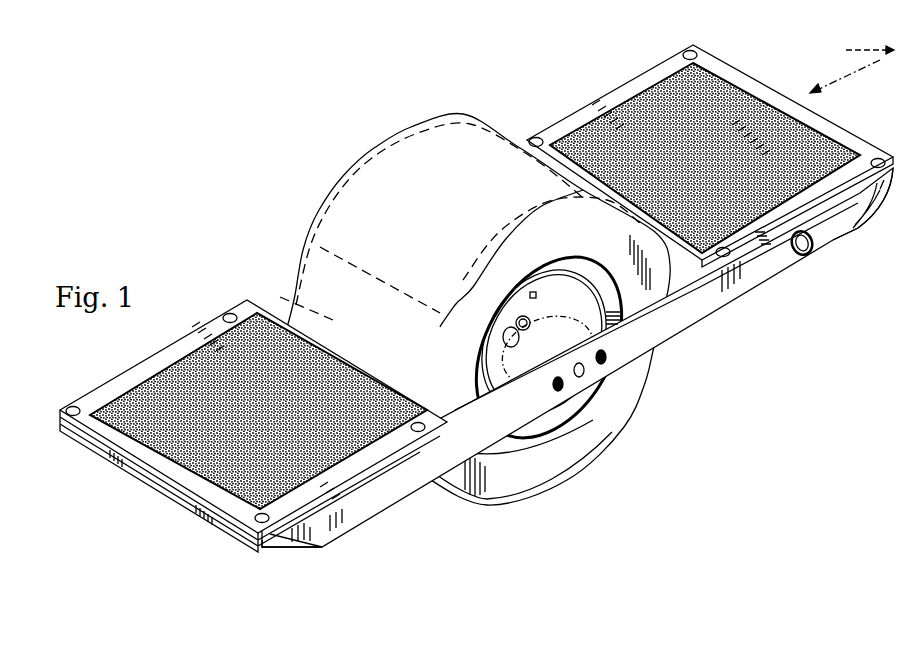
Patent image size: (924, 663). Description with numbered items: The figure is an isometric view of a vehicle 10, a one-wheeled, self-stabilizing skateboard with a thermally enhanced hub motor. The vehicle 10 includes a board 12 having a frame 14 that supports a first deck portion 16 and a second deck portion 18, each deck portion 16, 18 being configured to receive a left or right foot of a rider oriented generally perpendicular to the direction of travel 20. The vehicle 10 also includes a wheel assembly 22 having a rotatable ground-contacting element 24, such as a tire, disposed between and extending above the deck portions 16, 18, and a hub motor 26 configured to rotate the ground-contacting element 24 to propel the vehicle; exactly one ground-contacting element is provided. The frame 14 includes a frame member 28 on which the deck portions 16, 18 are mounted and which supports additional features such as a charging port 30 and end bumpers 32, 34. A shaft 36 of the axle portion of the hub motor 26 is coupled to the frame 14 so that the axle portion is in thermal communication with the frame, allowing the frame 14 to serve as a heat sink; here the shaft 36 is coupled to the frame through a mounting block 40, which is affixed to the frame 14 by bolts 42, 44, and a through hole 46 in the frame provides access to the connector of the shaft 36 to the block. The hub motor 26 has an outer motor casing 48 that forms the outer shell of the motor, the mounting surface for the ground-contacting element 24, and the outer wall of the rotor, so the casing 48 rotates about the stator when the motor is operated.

The vehicle 10 is at (257, 188).
The board 12 is at (710, 154).
The frame 14 is at (774, 276).
The first deck portion 16 is at (185, 352).
The second deck portion 18 is at (646, 90).
The direction of travel 20 is at (852, 66).
The wheel assembly 22 is at (577, 369).
The ground-contacting element 24 is at (449, 216).
The hub motor 26 is at (563, 308).
The frame member 28 is at (405, 486).
The charging port 30 is at (804, 256).
The end bumper 32 is at (298, 550).
The end bumper 34 is at (869, 202).
The shaft 36 is at (520, 319).
The mounting block 40 is at (560, 347).
The bolt 42 is at (560, 392).
The bolt 44 is at (602, 365).
The through hole 46 is at (581, 378).
The outer motor casing 48 is at (578, 284).